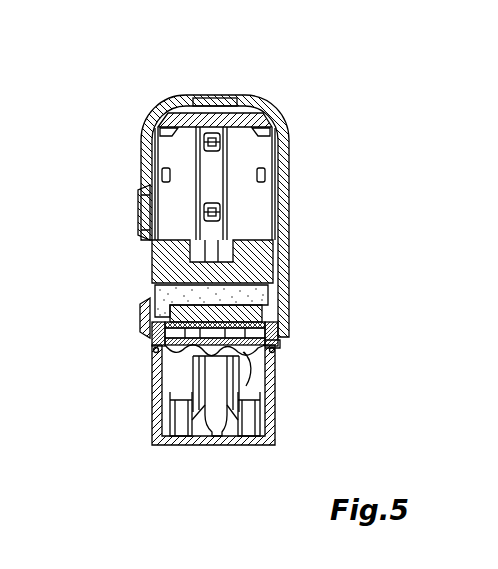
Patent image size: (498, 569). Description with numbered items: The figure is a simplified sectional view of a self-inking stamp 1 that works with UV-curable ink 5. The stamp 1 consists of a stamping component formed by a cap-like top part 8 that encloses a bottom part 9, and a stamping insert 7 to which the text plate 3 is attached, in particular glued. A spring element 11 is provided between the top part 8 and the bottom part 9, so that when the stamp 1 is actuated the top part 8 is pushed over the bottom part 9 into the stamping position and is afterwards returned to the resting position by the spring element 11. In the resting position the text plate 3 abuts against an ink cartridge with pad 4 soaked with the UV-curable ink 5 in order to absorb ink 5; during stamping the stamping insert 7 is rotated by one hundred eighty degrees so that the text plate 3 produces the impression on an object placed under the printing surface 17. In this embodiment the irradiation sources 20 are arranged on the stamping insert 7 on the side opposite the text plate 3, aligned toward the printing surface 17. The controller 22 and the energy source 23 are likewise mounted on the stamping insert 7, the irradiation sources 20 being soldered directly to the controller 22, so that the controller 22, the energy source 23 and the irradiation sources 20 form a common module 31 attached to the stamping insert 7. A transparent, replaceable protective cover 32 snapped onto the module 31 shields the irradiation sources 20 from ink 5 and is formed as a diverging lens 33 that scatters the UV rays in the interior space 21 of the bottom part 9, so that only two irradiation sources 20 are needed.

The stamp 1 is at (322, 76).
The top part 8 is at (288, 177).
The UV-curable ink 5 is at (192, 295).
The ink cartridge with pad 4 is at (153, 297).
The text plate 3 is at (252, 308).
The stamping insert 7 is at (147, 318).
The energy source 23 is at (152, 336).
The controller 22 is at (265, 337).
The irradiation sources 20 is at (150, 350).
The module 31 is at (276, 343).
The interior space 21 is at (166, 358).
The protective cover 32 is at (172, 362).
The spring element 11 is at (212, 387).
The lens 33 is at (248, 368).
The bottom part 9 is at (273, 436).
The printing surface 17 is at (165, 472).